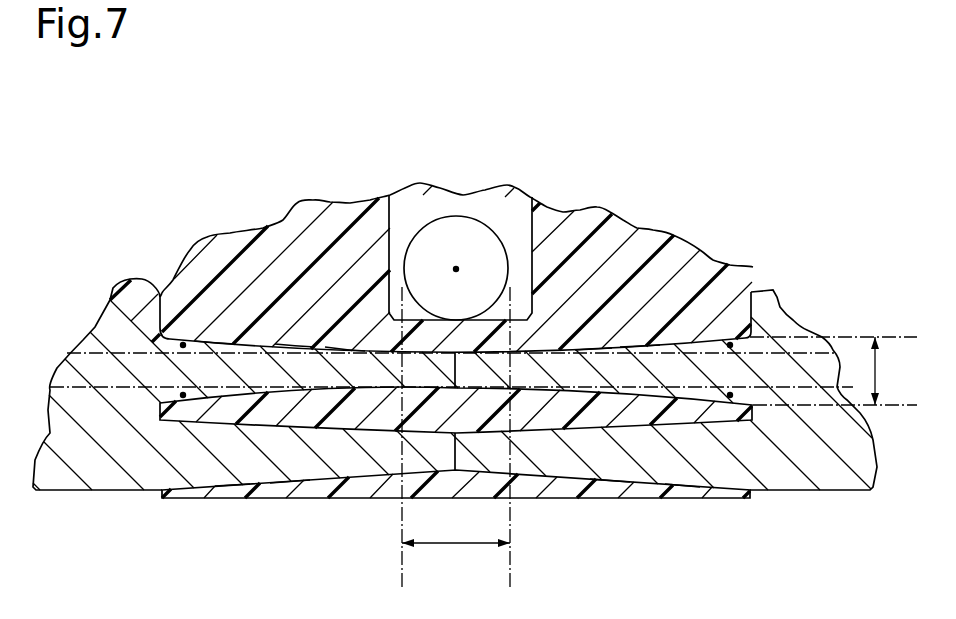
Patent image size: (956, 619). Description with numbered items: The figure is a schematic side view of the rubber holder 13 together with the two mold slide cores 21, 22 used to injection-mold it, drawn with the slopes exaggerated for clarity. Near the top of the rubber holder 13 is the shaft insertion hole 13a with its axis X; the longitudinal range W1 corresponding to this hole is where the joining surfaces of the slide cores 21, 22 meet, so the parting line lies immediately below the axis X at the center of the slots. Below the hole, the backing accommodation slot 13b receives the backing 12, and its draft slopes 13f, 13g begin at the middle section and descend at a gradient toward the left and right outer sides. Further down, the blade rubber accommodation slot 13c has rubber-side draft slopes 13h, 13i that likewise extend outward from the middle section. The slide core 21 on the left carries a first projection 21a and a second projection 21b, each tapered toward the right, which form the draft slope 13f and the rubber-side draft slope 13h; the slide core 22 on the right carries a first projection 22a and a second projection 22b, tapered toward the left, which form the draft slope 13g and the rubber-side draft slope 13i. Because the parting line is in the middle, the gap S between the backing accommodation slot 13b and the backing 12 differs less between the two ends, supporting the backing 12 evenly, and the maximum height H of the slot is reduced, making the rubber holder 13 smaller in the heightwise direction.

The backing 12 is at (123, 353).
The rubber holder 13 is at (685, 240).
The shaft insertion hole 13a is at (463, 216).
The backing accommodation slot 13b is at (298, 345).
The blade rubber accommodation slot 13c is at (354, 477).
The draft slope 13f is at (219, 345).
The draft slope 13g is at (643, 345).
The rubber-side draft slope 13h is at (294, 480).
The rubber-side draft slope 13i is at (616, 480).
The slide core 21 is at (70, 490).
The first projection 21a is at (345, 351).
The second projection 21b is at (237, 471).
The slide core 22 is at (850, 489).
The first projection 22a is at (593, 366).
The second projection 22b is at (683, 471).
The gap S is at (182, 343).
The axis X is at (459, 266).
The maximum height H is at (877, 367).
The range W1 is at (455, 547).